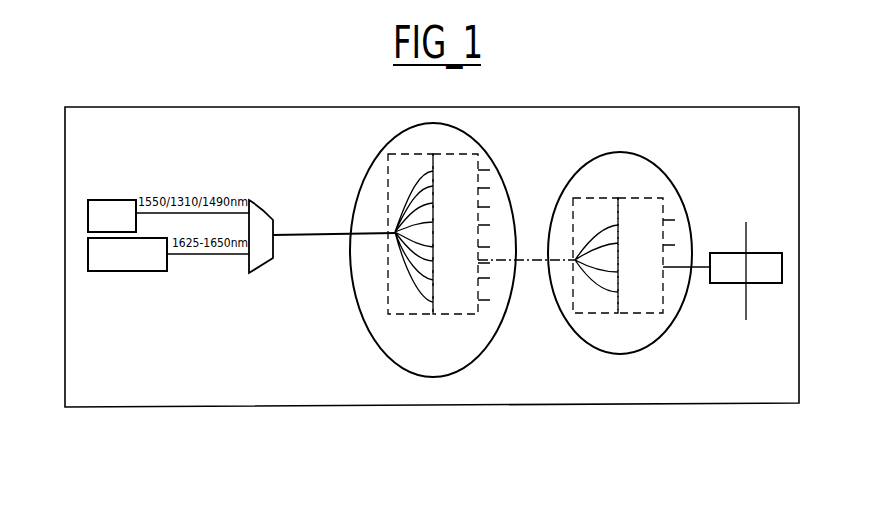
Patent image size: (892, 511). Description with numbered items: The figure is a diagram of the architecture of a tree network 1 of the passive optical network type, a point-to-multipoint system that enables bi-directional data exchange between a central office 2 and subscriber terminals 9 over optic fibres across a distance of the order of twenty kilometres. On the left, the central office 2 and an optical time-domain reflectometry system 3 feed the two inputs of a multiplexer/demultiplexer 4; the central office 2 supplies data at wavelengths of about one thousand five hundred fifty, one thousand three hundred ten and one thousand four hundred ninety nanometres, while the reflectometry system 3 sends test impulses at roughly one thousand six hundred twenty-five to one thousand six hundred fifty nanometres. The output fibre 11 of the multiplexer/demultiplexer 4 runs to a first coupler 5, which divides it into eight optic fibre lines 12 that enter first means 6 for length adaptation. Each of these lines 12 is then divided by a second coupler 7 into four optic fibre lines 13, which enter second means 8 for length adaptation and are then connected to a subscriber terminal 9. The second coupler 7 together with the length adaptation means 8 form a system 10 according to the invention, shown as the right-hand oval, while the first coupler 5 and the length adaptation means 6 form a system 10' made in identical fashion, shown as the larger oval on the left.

The tree network 1 is at (234, 98).
The central office 2 is at (108, 199).
The optical time-domain reflectometry system 3 is at (124, 273).
The multiplexer/demultiplexer 4 is at (263, 200).
The first coupler 5 is at (400, 152).
The first means for length adaptation 6 is at (463, 152).
The second coupler 7 is at (590, 316).
The second means for length adaptation 8 is at (650, 315).
The subscriber terminals 9 is at (729, 252).
The system 10 is at (641, 242).
The system 10' is at (454, 247).
The optic fibre 11 is at (314, 234).
The optic fibre lines 12 is at (497, 265).
The optic fibre lines 13 is at (673, 292).